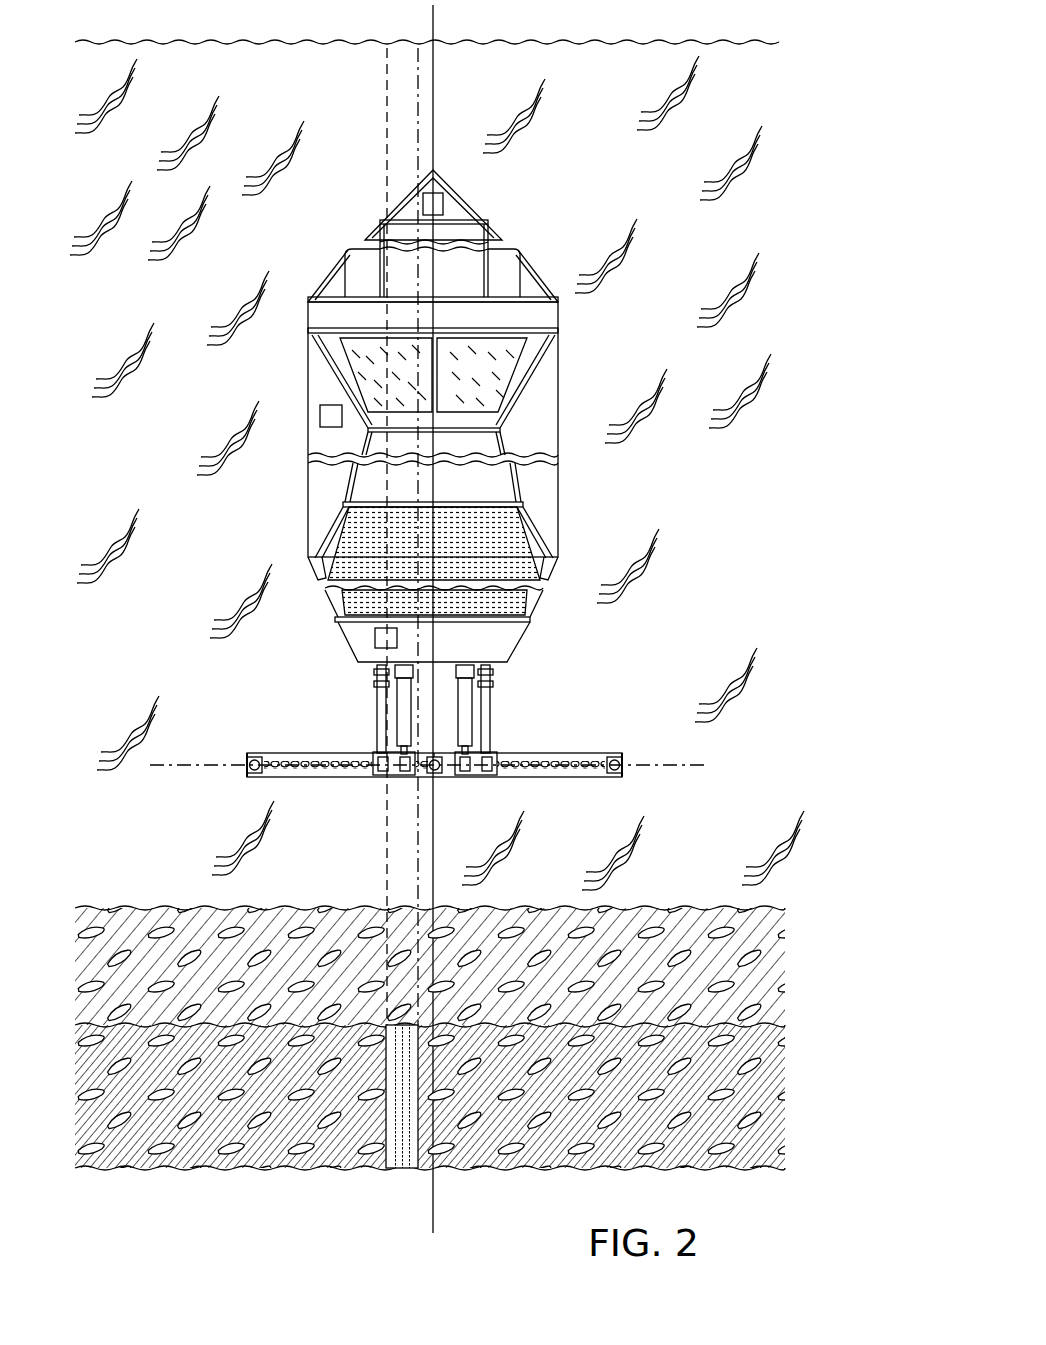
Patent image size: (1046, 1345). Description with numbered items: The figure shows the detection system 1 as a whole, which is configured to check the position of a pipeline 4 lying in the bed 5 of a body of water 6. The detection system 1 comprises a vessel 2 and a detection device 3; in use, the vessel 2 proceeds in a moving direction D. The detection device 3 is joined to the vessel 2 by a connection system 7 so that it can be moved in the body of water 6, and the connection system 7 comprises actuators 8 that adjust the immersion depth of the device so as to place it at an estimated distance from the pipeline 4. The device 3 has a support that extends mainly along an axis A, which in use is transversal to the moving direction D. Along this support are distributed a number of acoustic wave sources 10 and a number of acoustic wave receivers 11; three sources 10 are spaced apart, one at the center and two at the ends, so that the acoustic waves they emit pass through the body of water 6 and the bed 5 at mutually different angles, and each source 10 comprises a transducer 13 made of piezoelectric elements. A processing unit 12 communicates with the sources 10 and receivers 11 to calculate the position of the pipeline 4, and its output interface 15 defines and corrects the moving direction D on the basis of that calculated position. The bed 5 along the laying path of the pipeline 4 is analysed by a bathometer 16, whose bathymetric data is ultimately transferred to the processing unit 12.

The detection system 1 is at (356, 190).
The vessel 2 is at (434, 423).
The detection device 3 is at (569, 779).
The pipeline 4 is at (402, 1160).
The bed 5 is at (725, 955).
The body of water 6 is at (625, 490).
The connection system 7 is at (372, 750).
The actuators 8 is at (402, 712).
The acoustic wave sources 10 is at (253, 774).
The acoustic wave receivers 11 is at (314, 763).
The processing unit 12 is at (376, 640).
The transducer 13 is at (249, 751).
The output interface 15 is at (321, 414).
The bathometer 16 is at (443, 204).
The axis A is at (655, 765).
The moving direction D is at (437, 88).